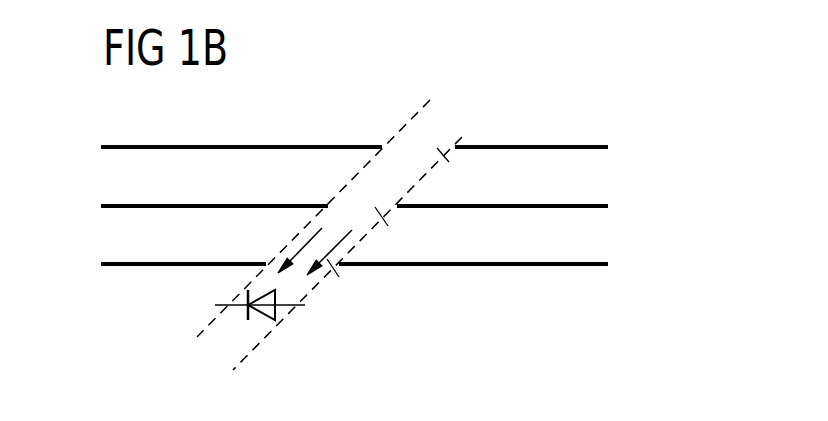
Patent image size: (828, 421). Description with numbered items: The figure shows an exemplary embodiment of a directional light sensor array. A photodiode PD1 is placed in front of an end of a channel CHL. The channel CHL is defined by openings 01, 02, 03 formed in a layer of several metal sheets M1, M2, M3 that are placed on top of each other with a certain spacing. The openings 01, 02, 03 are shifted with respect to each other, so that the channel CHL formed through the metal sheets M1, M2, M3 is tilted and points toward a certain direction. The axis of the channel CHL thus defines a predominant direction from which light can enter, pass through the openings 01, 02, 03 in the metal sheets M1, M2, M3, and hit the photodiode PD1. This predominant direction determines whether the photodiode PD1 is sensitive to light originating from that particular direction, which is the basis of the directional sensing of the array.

The metal sheet M1 is at (580, 145).
The metal sheet M2 is at (595, 204).
The metal sheet M3 is at (580, 267).
The channel CHL is at (438, 125).
The opening 01 is at (449, 162).
The opening 02 is at (388, 226).
The opening 03 is at (339, 277).
The photodiode PD1 is at (280, 313).